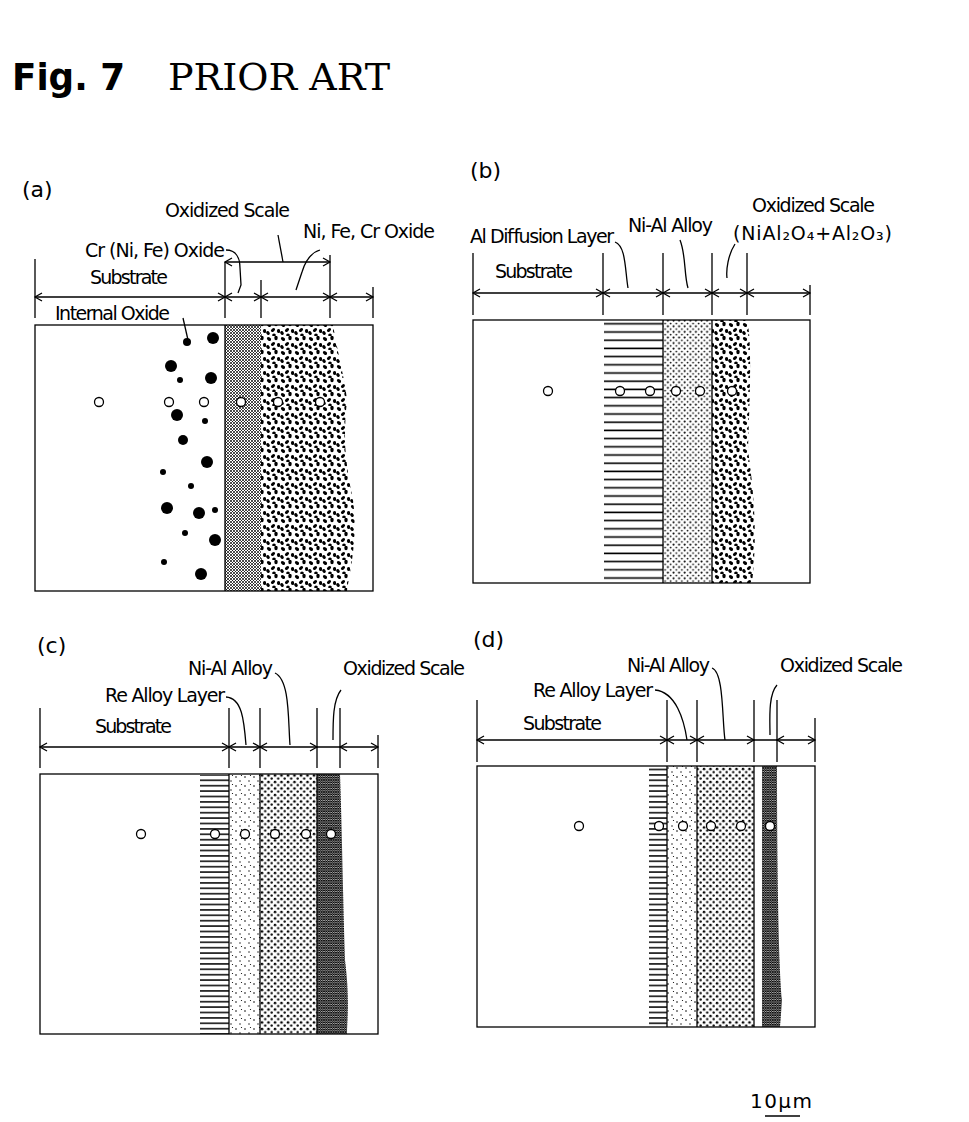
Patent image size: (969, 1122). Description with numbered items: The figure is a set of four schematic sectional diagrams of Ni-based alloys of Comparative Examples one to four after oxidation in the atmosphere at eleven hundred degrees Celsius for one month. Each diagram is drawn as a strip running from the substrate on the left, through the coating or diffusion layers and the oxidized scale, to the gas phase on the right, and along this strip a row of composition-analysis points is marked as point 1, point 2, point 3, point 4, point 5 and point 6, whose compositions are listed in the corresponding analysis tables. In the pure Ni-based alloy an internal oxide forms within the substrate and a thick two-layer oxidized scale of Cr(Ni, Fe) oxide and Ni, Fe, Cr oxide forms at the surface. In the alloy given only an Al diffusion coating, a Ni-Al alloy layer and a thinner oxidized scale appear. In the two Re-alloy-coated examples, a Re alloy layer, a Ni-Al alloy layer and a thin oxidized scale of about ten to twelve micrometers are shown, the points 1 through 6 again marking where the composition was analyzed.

The analysis point 1 is at (425, 699).
The analysis point 2 is at (411, 699).
The analysis point 3 is at (451, 699).
The analysis point 4 is at (489, 699).
The analysis point 5 is at (521, 699).
The analysis point 6 is at (591, 666).